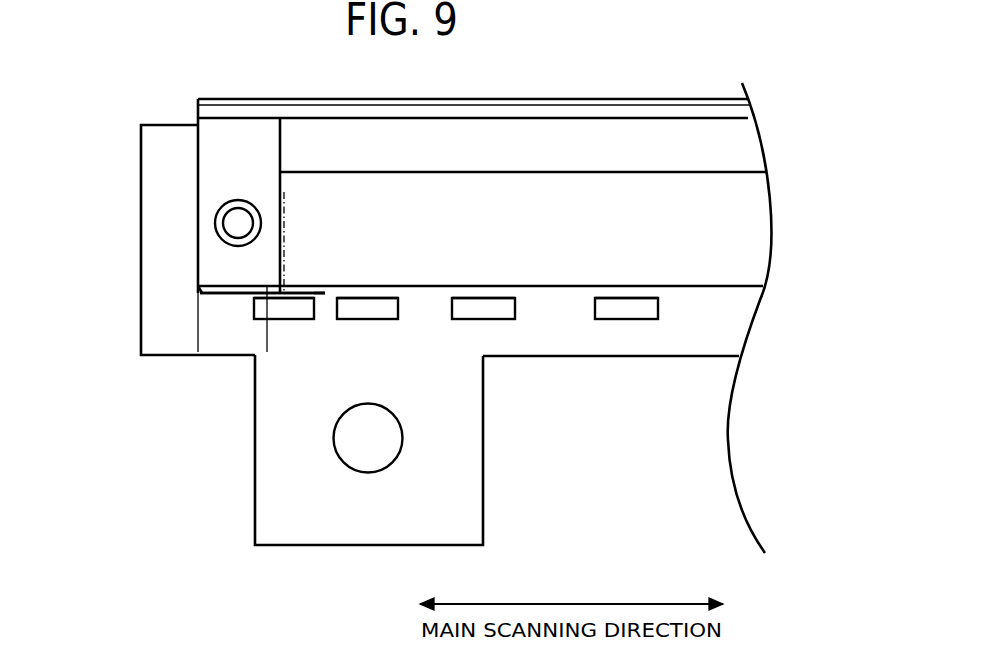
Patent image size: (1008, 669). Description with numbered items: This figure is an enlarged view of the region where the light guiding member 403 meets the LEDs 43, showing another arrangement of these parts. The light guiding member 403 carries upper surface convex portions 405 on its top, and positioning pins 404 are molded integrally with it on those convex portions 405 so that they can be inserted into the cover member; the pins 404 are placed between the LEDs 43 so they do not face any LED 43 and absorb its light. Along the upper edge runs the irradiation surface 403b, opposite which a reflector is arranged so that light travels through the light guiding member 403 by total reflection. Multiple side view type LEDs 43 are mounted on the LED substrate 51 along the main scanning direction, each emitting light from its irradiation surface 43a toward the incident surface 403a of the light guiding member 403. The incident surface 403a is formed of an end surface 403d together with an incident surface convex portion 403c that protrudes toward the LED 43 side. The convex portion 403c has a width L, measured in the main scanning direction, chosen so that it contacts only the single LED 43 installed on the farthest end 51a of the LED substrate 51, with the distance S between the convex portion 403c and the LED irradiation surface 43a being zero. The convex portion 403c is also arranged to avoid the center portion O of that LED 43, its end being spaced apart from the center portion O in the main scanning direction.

The light guiding member 403 is at (660, 185).
The incident surface 403a is at (90, 383).
The irradiation surface 403b is at (500, 99).
The incident surface convex portion 403c is at (202, 290).
The end surface 403d is at (325, 288).
The positioning pin 404 is at (237, 216).
The upper surface convex portion 405 is at (238, 132).
The LED 43 is at (288, 312).
The irradiation surface 43a is at (626, 298).
The LED substrate 51 is at (374, 538).
The farthest end 51a is at (153, 247).
The center portion O is at (287, 203).
The distance S is at (253, 299).
The width L is at (267, 342).